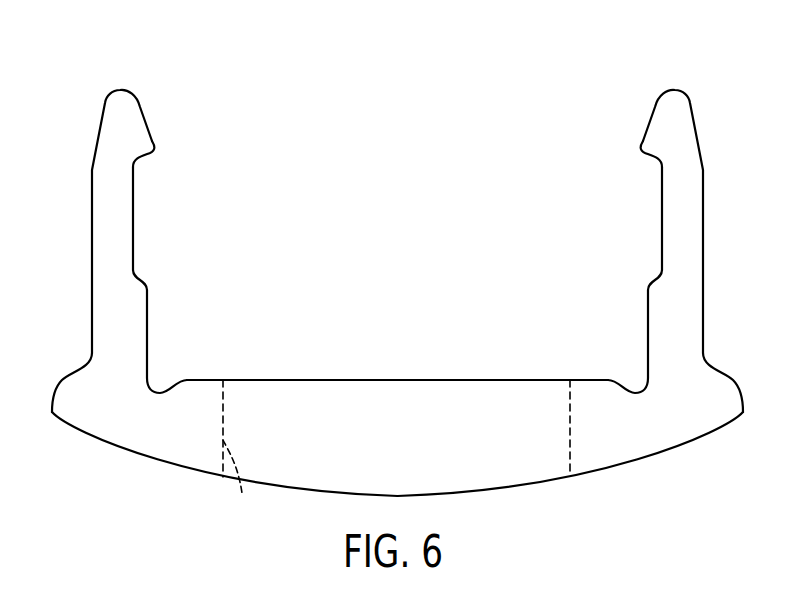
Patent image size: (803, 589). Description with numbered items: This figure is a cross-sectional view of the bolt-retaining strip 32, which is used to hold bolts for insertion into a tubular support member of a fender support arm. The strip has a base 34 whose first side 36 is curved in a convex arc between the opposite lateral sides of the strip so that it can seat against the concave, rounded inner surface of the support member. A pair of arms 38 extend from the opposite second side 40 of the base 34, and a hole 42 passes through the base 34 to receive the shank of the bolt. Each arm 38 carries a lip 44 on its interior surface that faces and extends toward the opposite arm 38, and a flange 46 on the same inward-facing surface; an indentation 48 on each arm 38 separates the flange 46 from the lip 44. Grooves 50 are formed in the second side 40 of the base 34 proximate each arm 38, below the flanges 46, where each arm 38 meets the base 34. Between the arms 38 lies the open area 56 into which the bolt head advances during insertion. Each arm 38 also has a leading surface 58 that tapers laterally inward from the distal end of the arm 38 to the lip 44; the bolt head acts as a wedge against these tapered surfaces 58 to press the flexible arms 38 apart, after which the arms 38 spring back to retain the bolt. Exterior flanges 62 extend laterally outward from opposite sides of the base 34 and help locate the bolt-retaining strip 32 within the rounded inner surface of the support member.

The bolt-retaining strip 32 is at (693, 50).
The base 34 is at (505, 470).
The first side 36 is at (287, 490).
The arms 38 is at (112, 218).
The second side 40 is at (348, 378).
The hole 42 is at (239, 483).
The lip 44 is at (150, 153).
The flange 46 is at (147, 320).
The indentation 48 is at (133, 238).
The grooves 50 is at (158, 390).
The open area 56 is at (380, 262).
The leading surface 58 is at (147, 108).
The exterior flanges 62 is at (63, 403).